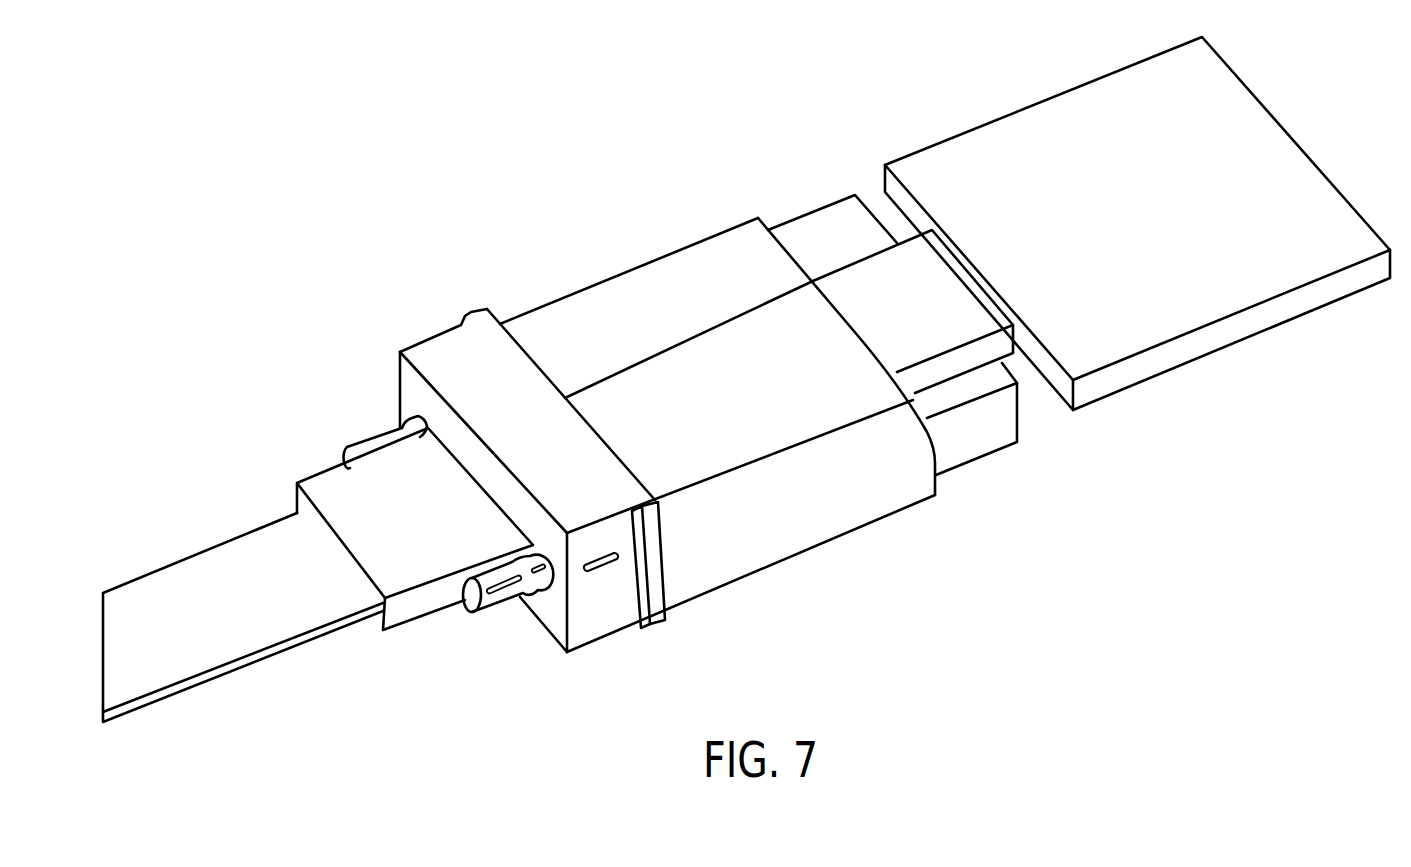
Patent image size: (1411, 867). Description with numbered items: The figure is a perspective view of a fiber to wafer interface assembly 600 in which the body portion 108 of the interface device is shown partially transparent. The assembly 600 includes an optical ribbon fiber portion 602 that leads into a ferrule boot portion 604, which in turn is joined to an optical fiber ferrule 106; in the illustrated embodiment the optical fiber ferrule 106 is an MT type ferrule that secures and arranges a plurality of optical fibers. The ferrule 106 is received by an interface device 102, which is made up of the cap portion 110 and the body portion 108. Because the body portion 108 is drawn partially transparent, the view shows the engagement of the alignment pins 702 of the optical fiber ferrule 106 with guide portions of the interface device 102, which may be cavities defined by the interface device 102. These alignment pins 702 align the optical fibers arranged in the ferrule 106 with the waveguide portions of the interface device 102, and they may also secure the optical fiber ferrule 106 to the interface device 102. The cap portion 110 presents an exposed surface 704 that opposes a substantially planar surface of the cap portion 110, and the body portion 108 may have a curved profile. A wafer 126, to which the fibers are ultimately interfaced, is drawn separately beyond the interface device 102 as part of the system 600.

The interface device 102 is at (709, 356).
The optical fiber ferrule 106 is at (725, 565).
The body portion 108 is at (990, 437).
The cap portion 110 is at (853, 330).
The wafer 126 is at (1212, 343).
The fiber to wafer interface system 600 is at (336, 417).
The optical ribbon fiber portion 602 is at (262, 638).
The ferrule boot portion 604 is at (415, 608).
The alignment pins 702 is at (500, 597).
The exposed surface 704 is at (950, 283).